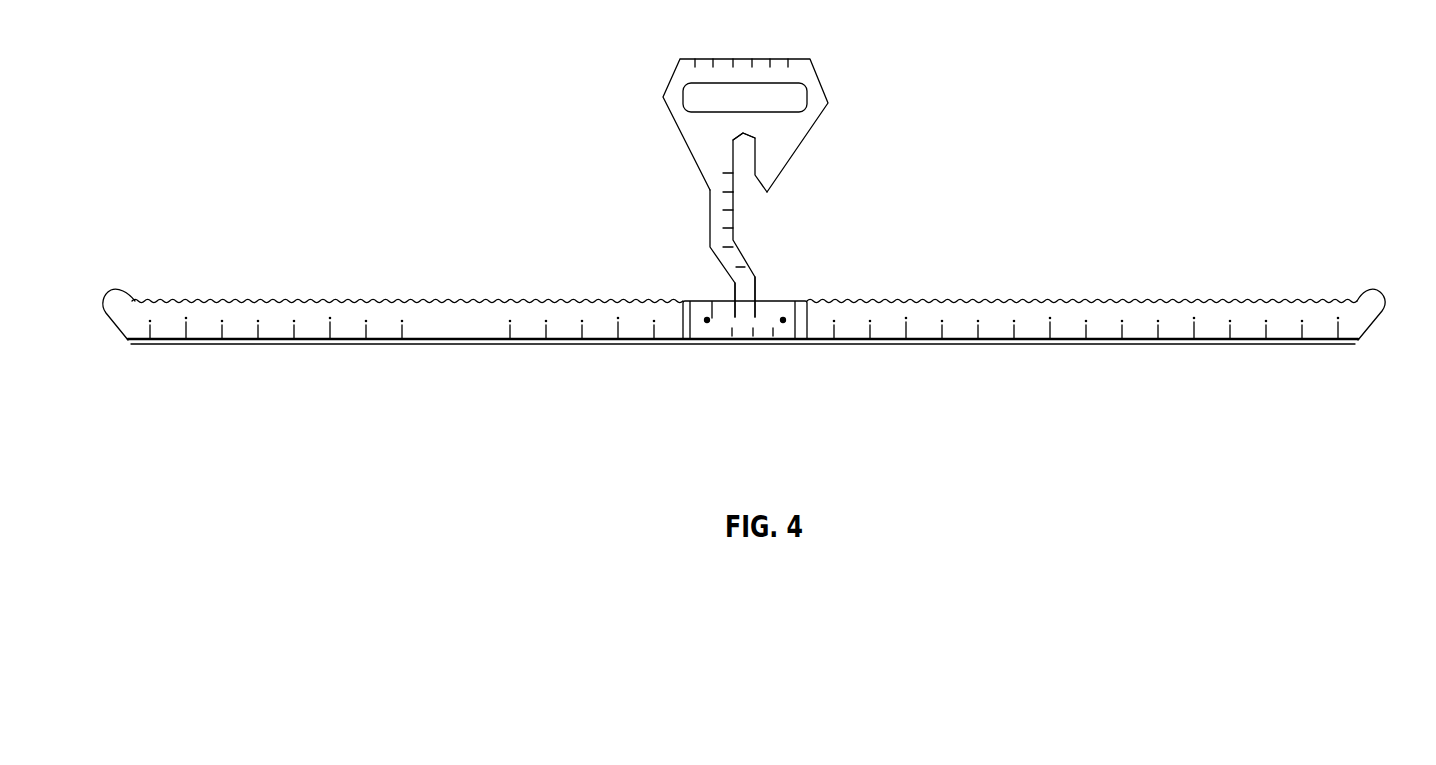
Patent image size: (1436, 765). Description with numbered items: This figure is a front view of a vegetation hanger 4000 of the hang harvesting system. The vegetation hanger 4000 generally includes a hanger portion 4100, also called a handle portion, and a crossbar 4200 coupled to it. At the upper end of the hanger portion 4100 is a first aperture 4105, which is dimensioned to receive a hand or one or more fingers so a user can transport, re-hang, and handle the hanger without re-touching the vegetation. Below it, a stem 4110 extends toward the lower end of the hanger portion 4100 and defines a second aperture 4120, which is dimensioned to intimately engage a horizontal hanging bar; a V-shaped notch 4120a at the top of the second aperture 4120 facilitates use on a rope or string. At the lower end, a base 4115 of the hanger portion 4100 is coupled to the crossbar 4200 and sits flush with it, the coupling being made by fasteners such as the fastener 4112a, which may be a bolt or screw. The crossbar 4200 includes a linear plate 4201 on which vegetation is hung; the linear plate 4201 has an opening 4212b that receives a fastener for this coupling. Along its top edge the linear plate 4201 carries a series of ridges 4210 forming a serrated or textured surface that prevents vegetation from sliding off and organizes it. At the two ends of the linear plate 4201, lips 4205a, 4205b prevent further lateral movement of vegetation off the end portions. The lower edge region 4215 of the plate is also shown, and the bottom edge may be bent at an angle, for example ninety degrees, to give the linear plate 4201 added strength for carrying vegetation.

The vegetation hanger 4000 is at (1128, 124).
The hanger portion 4100 is at (858, 103).
The first aperture 4105 is at (702, 101).
The stem 4110 is at (737, 278).
The base 4115 is at (759, 300).
The second aperture 4120 is at (747, 188).
The V-shaped notch 4120a is at (735, 143).
The crossbar 4200 is at (1116, 364).
The linear plate 4201 is at (475, 317).
The lip 4205a is at (1376, 310).
The lip 4205b is at (137, 322).
The ridges 4210 is at (272, 300).
The bottom surface 4215 is at (328, 345).
The fastener 4112a is at (707, 321).
The opening 4212b is at (784, 321).